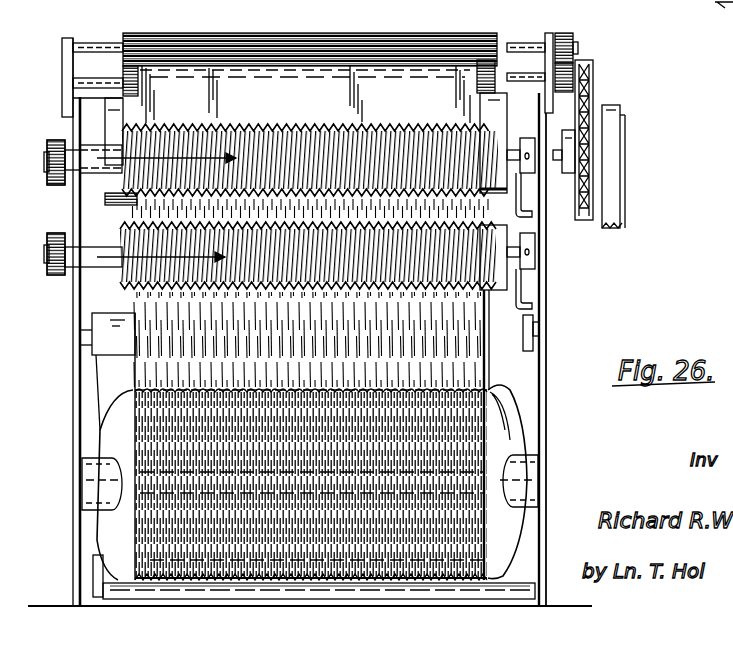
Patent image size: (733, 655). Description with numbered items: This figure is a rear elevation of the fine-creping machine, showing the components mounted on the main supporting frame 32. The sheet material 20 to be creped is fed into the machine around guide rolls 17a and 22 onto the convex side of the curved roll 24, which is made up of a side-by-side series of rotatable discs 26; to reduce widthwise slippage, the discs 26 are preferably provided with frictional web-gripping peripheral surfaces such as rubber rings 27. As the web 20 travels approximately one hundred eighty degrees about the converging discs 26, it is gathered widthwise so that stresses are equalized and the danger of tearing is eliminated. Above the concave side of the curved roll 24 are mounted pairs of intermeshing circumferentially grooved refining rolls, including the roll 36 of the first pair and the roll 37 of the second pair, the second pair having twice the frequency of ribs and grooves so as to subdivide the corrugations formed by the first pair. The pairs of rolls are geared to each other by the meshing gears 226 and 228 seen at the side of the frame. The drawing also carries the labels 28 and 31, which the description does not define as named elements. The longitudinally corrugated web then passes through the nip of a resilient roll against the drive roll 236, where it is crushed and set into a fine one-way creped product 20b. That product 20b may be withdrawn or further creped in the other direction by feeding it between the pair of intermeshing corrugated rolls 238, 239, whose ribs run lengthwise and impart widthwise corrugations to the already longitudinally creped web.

The guide roll 17a is at (100, 578).
The sheet material 20 is at (107, 333).
The one-way creped product 20b is at (320, 95).
The guide roll 22 is at (541, 318).
The curved roll 24 is at (97, 539).
The discs 26 is at (113, 397).
The rubber rings 27 is at (101, 262).
The upper worm shaft 28 is at (98, 162).
The fibers 31 is at (426, 335).
The main supporting frame 32 is at (543, 356).
The circumferentially grooved refining roll 36 is at (312, 345).
The circumferentially grooved refining roll 37 is at (400, 125).
The meshing gear 226 is at (57, 278).
The meshing gear 228 is at (58, 182).
The drive roll 236 is at (108, 118).
The intermeshing corrugated roll 238 is at (137, 31).
The intermeshing corrugated roll 239 is at (197, 24).